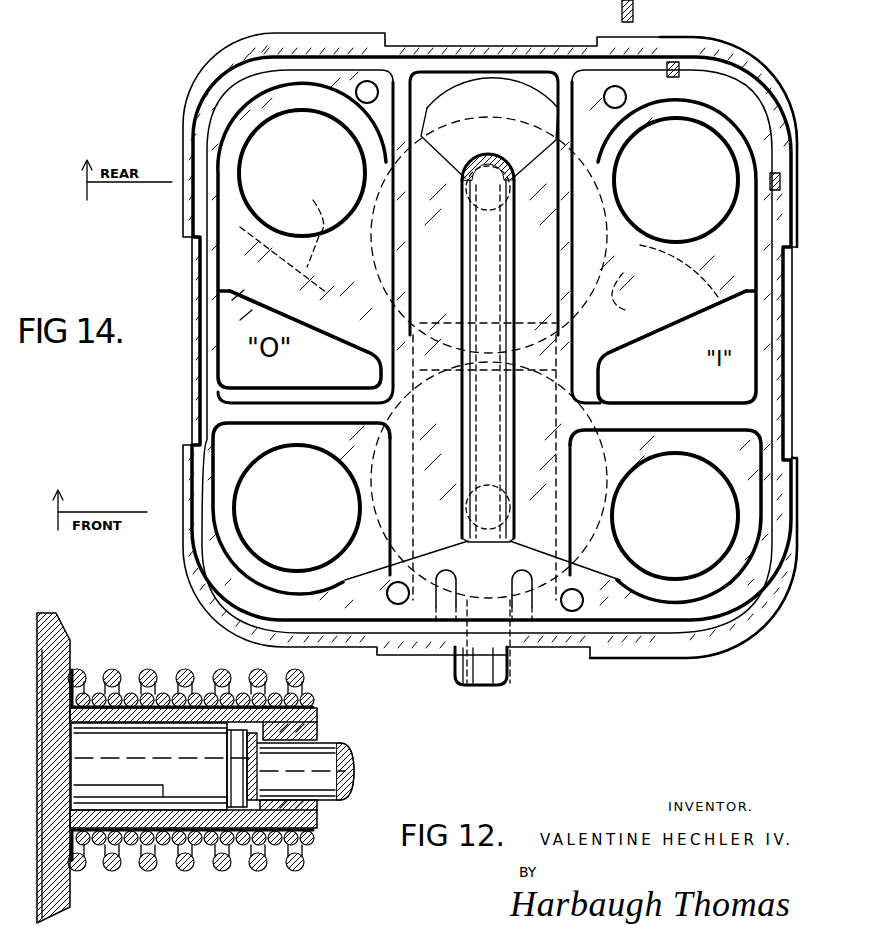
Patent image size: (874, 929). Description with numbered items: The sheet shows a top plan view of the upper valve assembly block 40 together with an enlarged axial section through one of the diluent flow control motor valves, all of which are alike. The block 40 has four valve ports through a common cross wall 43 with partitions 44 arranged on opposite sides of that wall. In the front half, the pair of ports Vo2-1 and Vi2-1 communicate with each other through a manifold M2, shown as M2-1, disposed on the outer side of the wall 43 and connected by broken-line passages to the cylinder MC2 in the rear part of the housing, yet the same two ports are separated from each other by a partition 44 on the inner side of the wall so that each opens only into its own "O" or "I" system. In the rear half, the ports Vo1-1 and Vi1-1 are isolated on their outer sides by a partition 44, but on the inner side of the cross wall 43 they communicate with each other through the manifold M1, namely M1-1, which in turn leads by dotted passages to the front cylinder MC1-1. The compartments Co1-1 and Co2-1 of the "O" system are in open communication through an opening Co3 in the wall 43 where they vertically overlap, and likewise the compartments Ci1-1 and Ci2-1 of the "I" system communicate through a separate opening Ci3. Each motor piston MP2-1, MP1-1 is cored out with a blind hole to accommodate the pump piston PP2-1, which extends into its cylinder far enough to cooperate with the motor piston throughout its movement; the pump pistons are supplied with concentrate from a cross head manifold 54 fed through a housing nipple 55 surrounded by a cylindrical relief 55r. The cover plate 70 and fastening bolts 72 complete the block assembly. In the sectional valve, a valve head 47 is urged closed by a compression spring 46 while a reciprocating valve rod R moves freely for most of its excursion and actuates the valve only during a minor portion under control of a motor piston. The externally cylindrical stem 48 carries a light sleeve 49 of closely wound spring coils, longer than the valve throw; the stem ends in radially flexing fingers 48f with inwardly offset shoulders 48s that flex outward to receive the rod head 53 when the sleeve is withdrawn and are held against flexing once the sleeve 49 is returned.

In FIG. 14, the valve assembly block 40 is at (178, 199).
In FIG. 14, the cross wall 43 is at (236, 262).
In FIG. 14, the partition 44 is at (627, 340).
In FIG. 12, the compression spring 46 is at (150, 690).
In FIG. 12, the valve head 47 is at (64, 640).
In FIG. 12, the stem 48 is at (116, 697).
In FIG. 12, the shoulder 48s is at (300, 722).
In FIG. 12, the radially flexing finger 48f is at (277, 803).
In FIG. 12, the sleeve 49 is at (150, 857).
In FIG. 12, the head 53 is at (233, 750).
In FIG. 14, the cross head manifold 54 is at (463, 428).
In FIG. 14, the nipple 55 is at (478, 683).
In FIG. 14, the cylindrical relief 55r is at (443, 620).
In FIG. 14, the cover plate 70 is at (643, 67).
In FIG. 14, the fastening bolt 72 is at (720, 87).
In FIG. 12, the valve rod R is at (330, 772).
In FIG. 14, the cylinder MC2 is at (472, 100).
In FIG. 14, the motor piston MP2-1 is at (497, 115).
In FIG. 14, the pump piston PP2-1 is at (507, 163).
In FIG. 14, the valve port Vo1-1 is at (345, 128).
In FIG. 14, the valve port Vi1-1 is at (727, 143).
In FIG. 14, the valve port Vo2-1 is at (236, 528).
In FIG. 14, the valve port Vi2-1 is at (733, 497).
In FIG. 14, the manifold M1 is at (375, 172).
In FIG. 14, the manifold M1-1 is at (657, 222).
In FIG. 14, the manifold M2 is at (355, 575).
In FIG. 14, the manifold M2-1 is at (378, 362).
In FIG. 14, the cylinder MC1-1 is at (365, 490).
In FIG. 14, the motor piston MP1-1 is at (572, 541).
In FIG. 14, the compartment Co1-1 is at (362, 270).
In FIG. 14, the compartment Co2-1 is at (327, 383).
In FIG. 14, the opening Co3 is at (228, 327).
In FIG. 14, the compartment Ci1-1 is at (671, 273).
In FIG. 14, the compartment Ci2-1 is at (610, 518).
In FIG. 14, the opening Ci3 is at (739, 370).